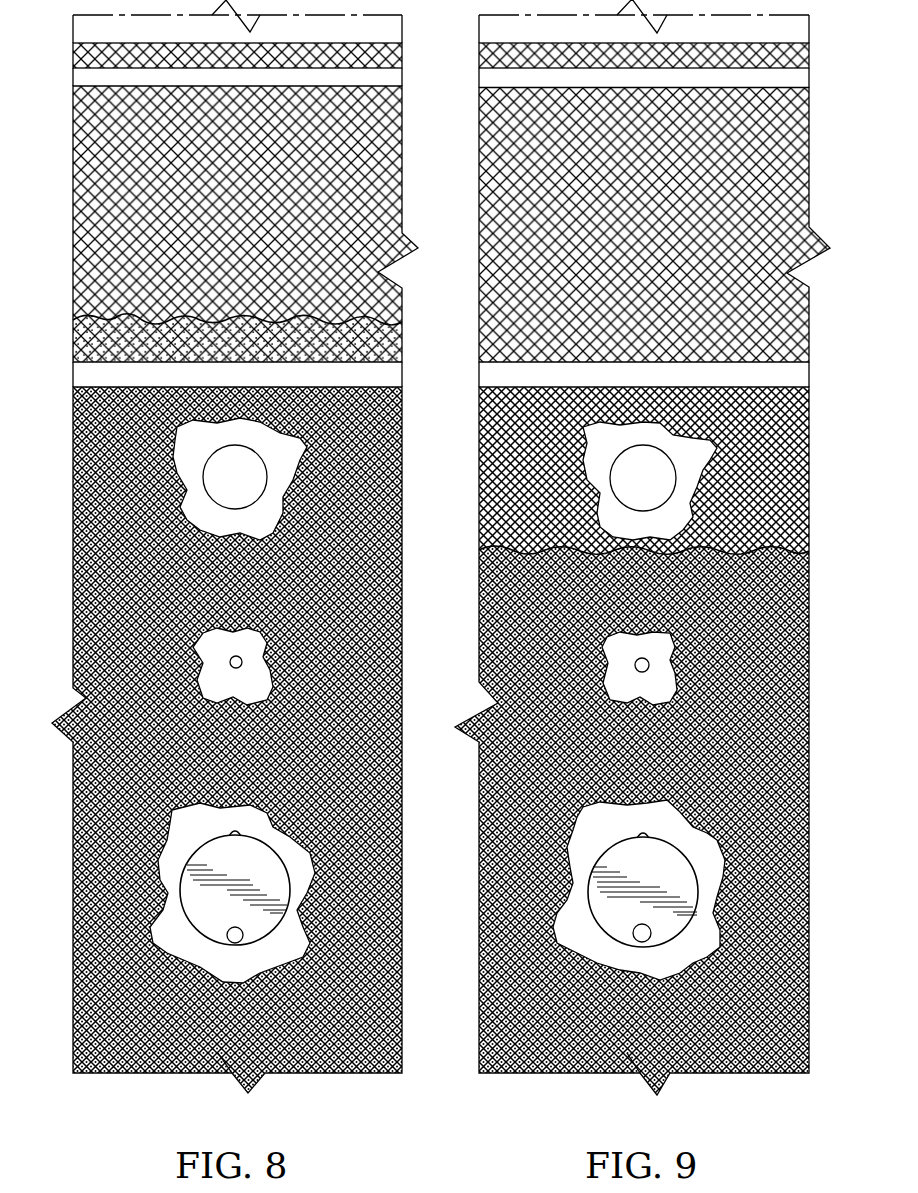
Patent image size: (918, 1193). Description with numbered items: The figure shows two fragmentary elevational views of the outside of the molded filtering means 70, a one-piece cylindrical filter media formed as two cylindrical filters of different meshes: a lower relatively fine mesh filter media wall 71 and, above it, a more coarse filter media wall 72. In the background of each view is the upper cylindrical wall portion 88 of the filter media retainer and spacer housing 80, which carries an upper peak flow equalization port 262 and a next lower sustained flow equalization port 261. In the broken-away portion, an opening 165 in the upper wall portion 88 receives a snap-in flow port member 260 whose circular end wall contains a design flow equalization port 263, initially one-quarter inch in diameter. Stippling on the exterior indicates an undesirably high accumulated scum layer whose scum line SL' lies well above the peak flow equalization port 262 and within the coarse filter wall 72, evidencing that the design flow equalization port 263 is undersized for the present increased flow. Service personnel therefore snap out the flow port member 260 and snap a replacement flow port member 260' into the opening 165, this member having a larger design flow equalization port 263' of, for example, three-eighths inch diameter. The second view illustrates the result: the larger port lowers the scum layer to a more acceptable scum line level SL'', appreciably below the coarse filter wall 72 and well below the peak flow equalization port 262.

In FIG. 8, the filtering means 70 is at (409, 108).
In FIG. 9, the filtering means 70 is at (476, 162).
In FIG. 8, the coarse cylindrical filter media wall 72 is at (409, 197).
In FIG. 9, the coarse cylindrical filter media wall 72 is at (476, 257).
In FIG. 8, the fine mesh cylindrical filter media wall 71 is at (378, 556).
In FIG. 9, the fine mesh cylindrical filter media wall 71 is at (477, 605).
In FIG. 8, the scum line SL' is at (216, 306).
In FIG. 9, the scum line level SL'' is at (655, 794).
In FIG. 8, the peak flow equalization port 262 is at (212, 470).
In FIG. 9, the peak flow equalization port 262 is at (660, 470).
In FIG. 8, the sustained flow equalization port 261 is at (230, 662).
In FIG. 9, the sustained flow equalization port 261 is at (650, 665).
In FIG. 8, the upper cylindrical wall portion 88 is at (175, 835).
In FIG. 9, the upper cylindrical wall portion 88 is at (660, 818).
In FIG. 8, the filter media retainer and spacer housing 80 is at (172, 928).
In FIG. 9, the filter media retainer and spacer housing 80 is at (710, 940).
In FIG. 8, the flow port member 260 is at (316, 883).
In FIG. 9, the replacement flow port member 260' is at (727, 888).
In FIG. 8, the opening 165 is at (280, 893).
In FIG. 9, the opening 165 is at (598, 905).
In FIG. 8, the design flow equalization port 263 is at (221, 919).
In FIG. 9, the larger design flow equalization port 263' is at (644, 895).